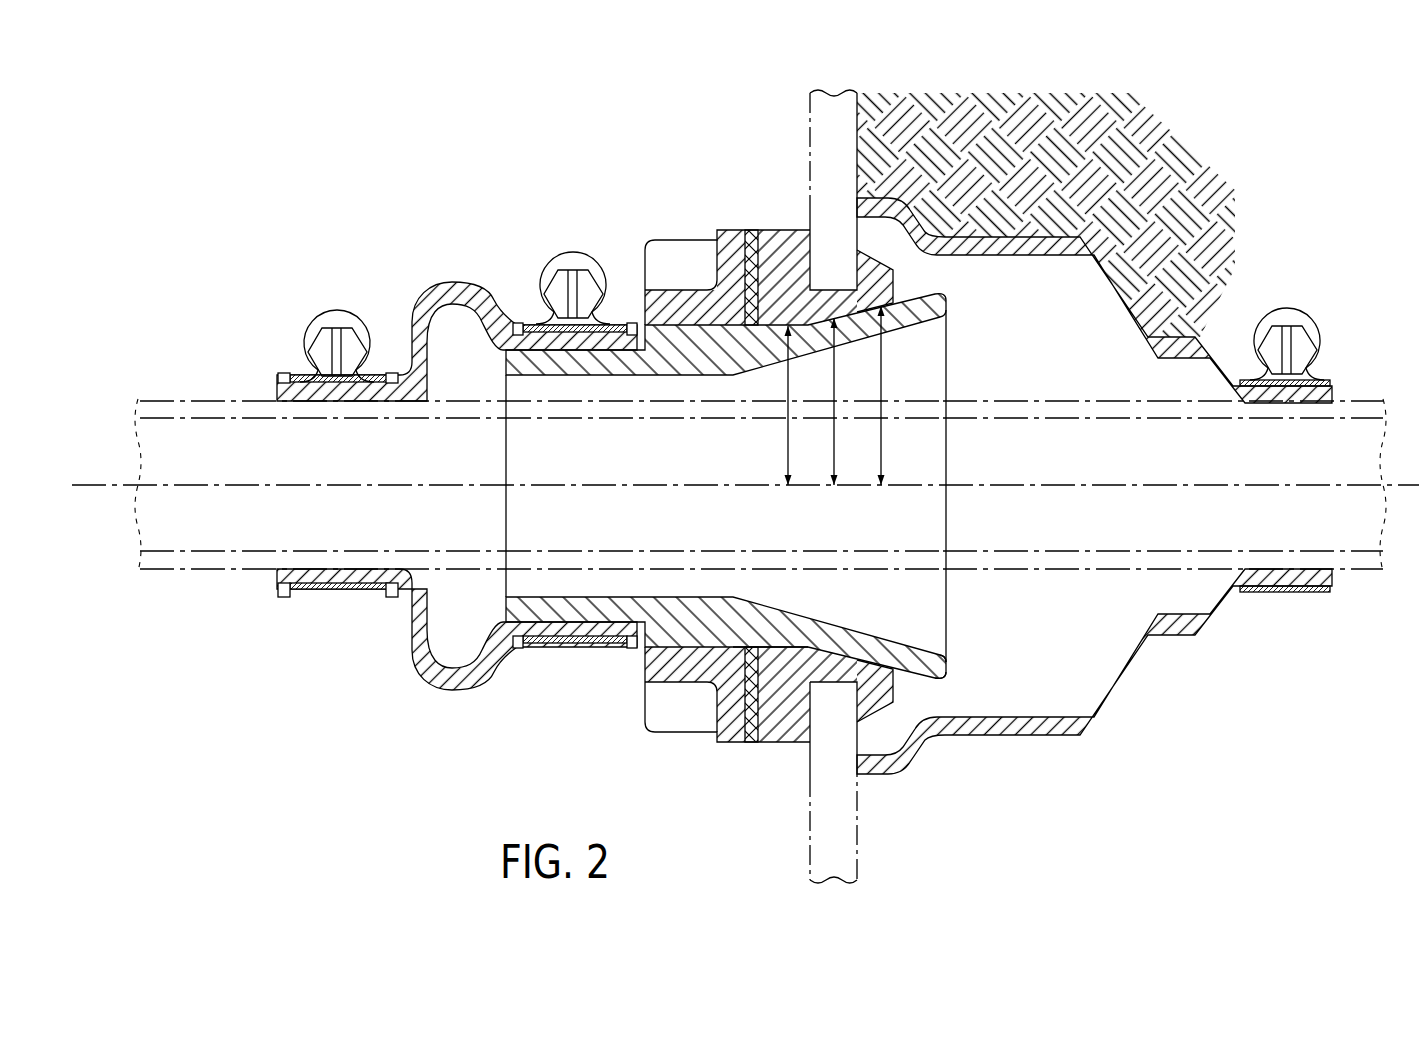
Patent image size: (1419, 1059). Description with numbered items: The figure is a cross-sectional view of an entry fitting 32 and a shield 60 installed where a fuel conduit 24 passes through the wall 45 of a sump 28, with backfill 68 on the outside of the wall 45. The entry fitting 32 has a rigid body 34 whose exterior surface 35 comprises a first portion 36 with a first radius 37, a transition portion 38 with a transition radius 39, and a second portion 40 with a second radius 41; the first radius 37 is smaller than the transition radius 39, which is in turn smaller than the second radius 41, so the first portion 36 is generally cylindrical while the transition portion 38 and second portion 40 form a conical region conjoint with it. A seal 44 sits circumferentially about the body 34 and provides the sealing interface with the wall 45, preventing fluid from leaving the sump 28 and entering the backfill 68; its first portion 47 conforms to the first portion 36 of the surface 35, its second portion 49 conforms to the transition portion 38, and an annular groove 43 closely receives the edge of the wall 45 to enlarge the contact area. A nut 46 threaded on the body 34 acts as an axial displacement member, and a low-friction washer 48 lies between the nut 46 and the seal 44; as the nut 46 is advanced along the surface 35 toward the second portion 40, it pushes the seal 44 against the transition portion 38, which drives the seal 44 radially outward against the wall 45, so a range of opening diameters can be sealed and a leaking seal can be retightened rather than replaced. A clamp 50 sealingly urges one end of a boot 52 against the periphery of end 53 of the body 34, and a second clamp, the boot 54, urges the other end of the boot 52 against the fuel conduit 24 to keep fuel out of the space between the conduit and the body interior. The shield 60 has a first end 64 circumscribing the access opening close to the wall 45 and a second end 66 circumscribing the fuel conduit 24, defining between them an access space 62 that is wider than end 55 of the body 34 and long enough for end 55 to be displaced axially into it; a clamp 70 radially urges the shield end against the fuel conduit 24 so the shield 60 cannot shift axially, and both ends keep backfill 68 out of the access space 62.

The fuel conduit 24 is at (175, 398).
The sump 28 is at (356, 230).
The entry fitting 32 is at (556, 188).
The body 34 is at (948, 300).
The surface 35 is at (935, 683).
The first portion 36 is at (777, 322).
The first radius 37 is at (786, 457).
The transition portion 38 is at (877, 270).
The transition radius 39 is at (836, 376).
The second portion 40 is at (868, 302).
The second radius 41 is at (882, 455).
The annular groove 43 is at (890, 700).
The seal 44 is at (778, 706).
The wall 45 is at (852, 253).
The nut 46 is at (645, 662).
The first portion 47 is at (778, 647).
The washer 48 is at (750, 742).
The second portion 49 is at (853, 664).
The clamp 50 is at (547, 276).
The boot 52 is at (420, 657).
The end 53 is at (508, 462).
The boot 54 is at (318, 327).
The end 55 is at (948, 670).
The shield 60 is at (1242, 287).
The access space 62 is at (1062, 387).
The first end 64 is at (868, 778).
The second end 66 is at (1333, 590).
The backfill 68 is at (956, 158).
The clamp 70 is at (1319, 342).